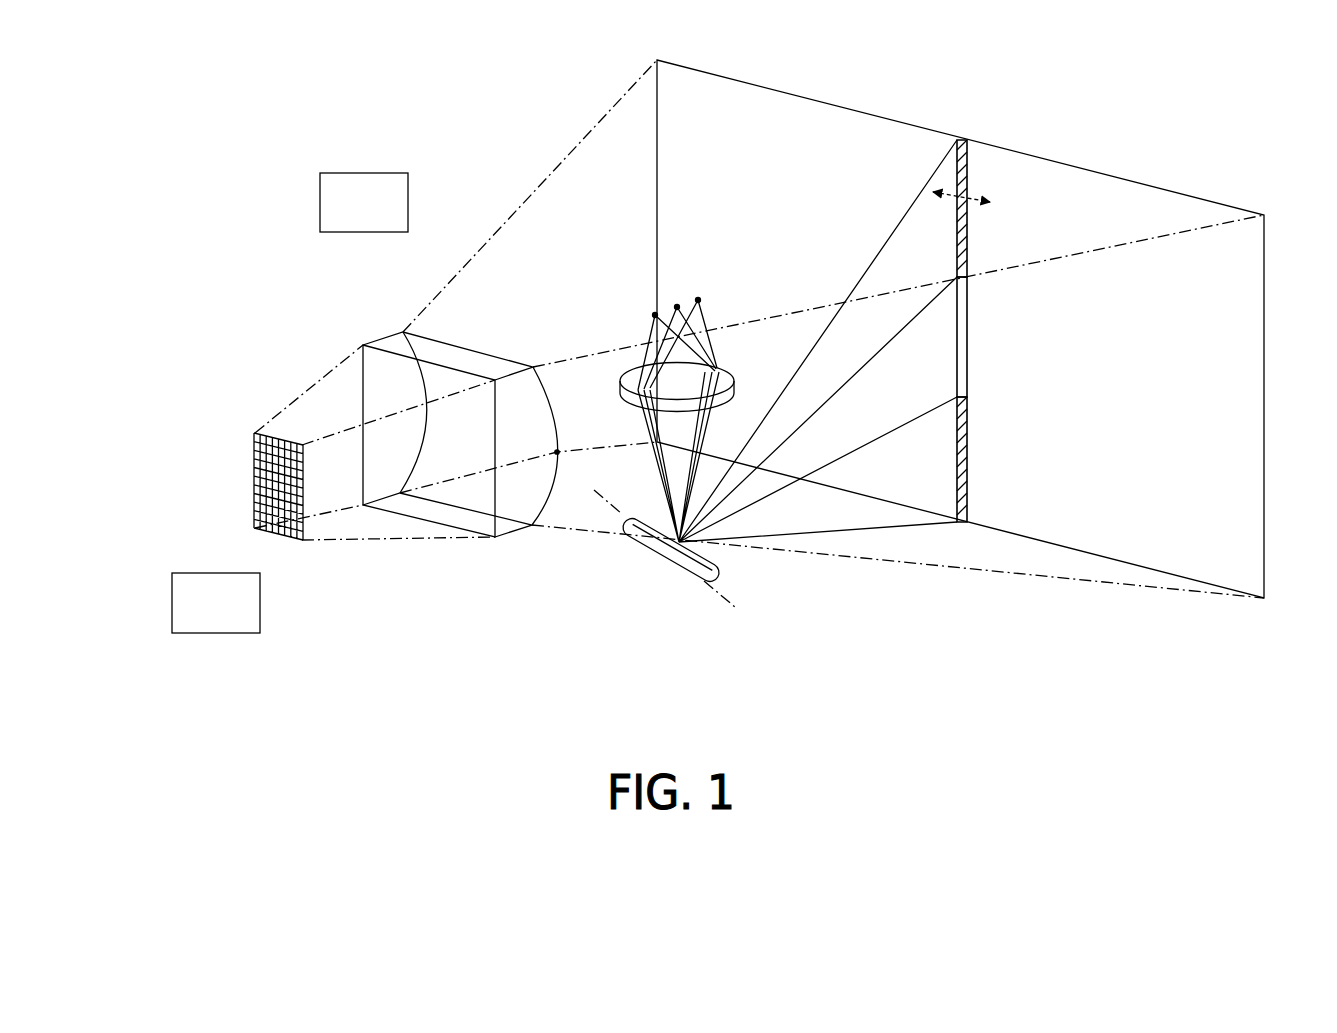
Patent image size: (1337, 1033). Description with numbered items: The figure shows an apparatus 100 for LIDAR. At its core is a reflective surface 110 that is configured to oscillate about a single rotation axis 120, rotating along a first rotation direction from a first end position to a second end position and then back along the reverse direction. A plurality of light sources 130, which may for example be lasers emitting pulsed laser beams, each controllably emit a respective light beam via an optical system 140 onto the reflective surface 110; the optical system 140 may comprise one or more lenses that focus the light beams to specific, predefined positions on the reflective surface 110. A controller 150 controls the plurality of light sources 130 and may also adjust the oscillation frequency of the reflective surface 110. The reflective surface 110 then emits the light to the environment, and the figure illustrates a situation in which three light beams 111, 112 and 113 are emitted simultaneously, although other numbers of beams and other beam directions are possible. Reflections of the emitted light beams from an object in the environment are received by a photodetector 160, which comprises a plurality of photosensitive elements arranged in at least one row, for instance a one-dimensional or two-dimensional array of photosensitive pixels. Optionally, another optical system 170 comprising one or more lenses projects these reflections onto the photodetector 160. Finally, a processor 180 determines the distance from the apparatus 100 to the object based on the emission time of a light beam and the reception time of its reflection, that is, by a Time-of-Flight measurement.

The apparatus for LIDAR 100 is at (307, 735).
The reflective surface 110 is at (662, 558).
The light beam 111 is at (967, 247).
The light beam 112 is at (967, 330).
The light beam 113 is at (967, 460).
The rotation axis 120 is at (750, 617).
The plurality of light sources 130 is at (667, 307).
The optical system 140 is at (630, 393).
The controller 150 is at (585, 287).
The photodetector 160 is at (254, 462).
The optical system 170 is at (510, 537).
The processor 180 is at (277, 533).